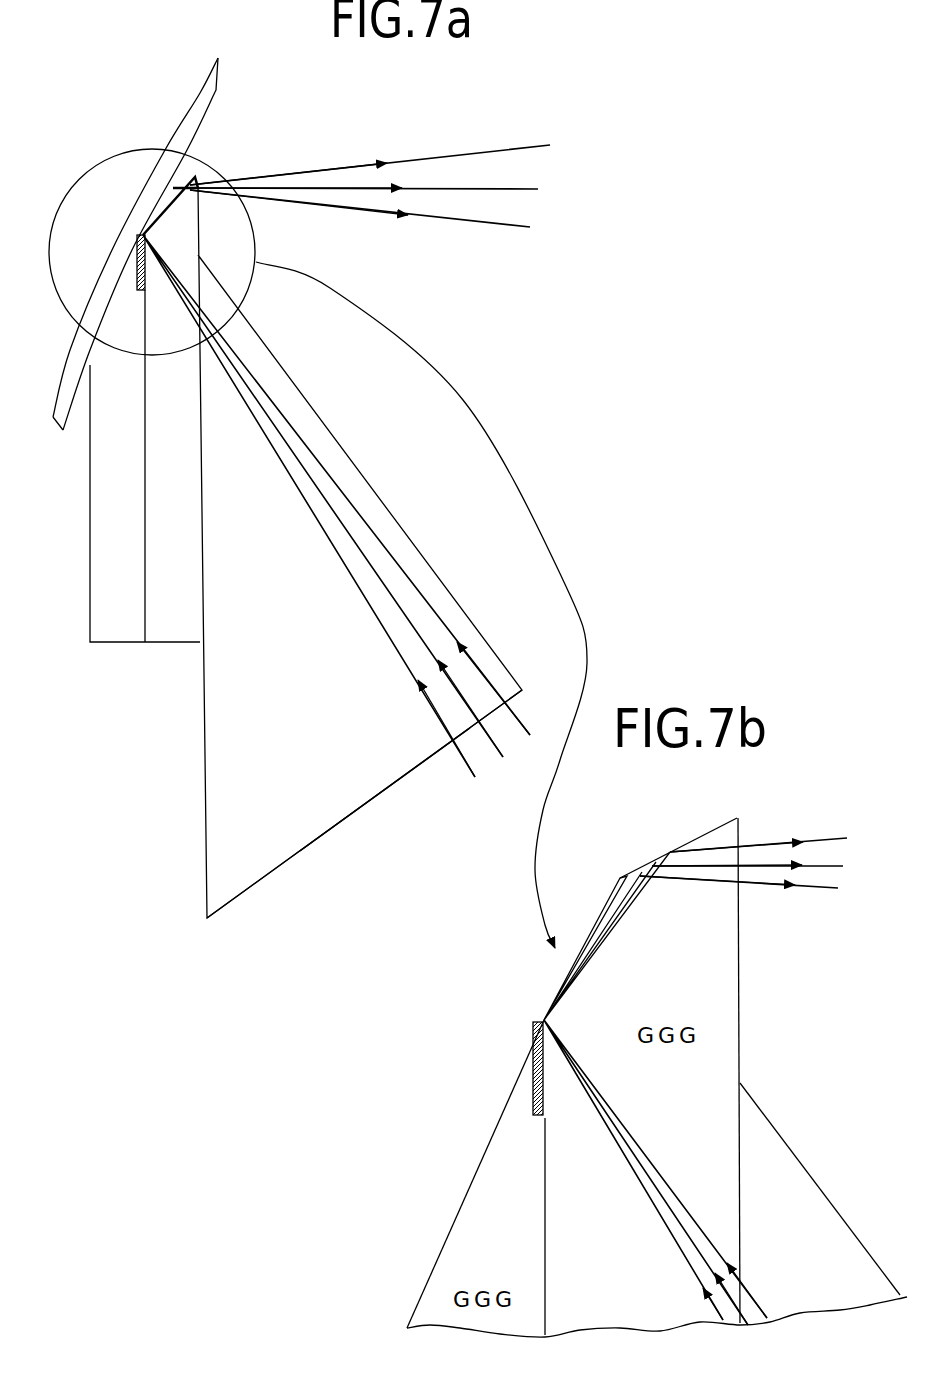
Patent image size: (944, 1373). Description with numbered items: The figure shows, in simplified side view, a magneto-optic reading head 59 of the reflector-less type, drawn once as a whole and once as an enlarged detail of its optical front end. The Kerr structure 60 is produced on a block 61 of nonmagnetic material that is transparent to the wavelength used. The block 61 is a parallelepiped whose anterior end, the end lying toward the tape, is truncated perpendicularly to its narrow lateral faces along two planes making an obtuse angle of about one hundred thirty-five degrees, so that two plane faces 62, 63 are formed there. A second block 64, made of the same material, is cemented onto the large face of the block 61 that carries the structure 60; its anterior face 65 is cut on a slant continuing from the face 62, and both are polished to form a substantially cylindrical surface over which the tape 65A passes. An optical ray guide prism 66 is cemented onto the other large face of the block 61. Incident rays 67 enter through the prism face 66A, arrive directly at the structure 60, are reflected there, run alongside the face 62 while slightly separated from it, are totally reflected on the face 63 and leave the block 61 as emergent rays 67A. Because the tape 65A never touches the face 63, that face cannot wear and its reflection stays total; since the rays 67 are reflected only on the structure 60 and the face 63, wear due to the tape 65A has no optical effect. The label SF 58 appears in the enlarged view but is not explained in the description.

In FIG. 7B, the SF 58 glass region 58 is at (820, 1203).
In FIG. 7A, the magneto-optic head 59 is at (577, 402).
In FIG. 7A, the Kerr structure 60 is at (137, 267).
In FIG. 7B, the Kerr structure 60 is at (532, 1085).
In FIG. 7A, the block 61 is at (183, 503).
In FIG. 7B, the block 61 is at (612, 1261).
In FIG. 7B, the plane face 62 is at (608, 898).
In FIG. 7B, the plane face 63 is at (707, 830).
In FIG. 7A, the block 64 is at (107, 615).
In FIG. 7B, the block 64 is at (508, 1261).
In FIG. 7B, the anterior face 65 is at (450, 1227).
In FIG. 7A, the tape 65A is at (197, 108).
In FIG. 7A, the optical ray guide prism 66 is at (308, 815).
In FIG. 7B, the optical ray guide prism 66 is at (848, 1263).
In FIG. 7A, the face of the prism 66A is at (383, 795).
In FIG. 7A, the incident rays 67 is at (377, 613).
In FIG. 7B, the incident rays 67 is at (670, 1190).
In FIG. 7A, the emergent rays 67A is at (503, 147).
In FIG. 7B, the emergent rays 67A is at (813, 893).